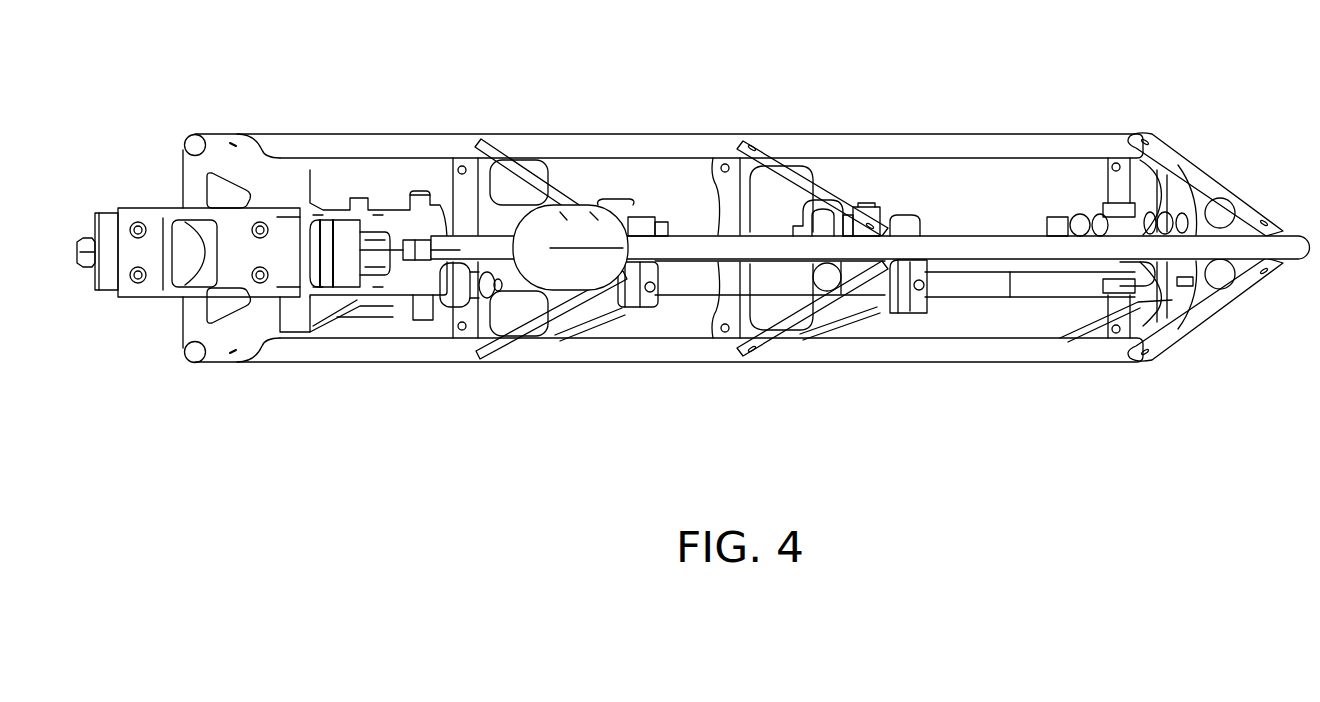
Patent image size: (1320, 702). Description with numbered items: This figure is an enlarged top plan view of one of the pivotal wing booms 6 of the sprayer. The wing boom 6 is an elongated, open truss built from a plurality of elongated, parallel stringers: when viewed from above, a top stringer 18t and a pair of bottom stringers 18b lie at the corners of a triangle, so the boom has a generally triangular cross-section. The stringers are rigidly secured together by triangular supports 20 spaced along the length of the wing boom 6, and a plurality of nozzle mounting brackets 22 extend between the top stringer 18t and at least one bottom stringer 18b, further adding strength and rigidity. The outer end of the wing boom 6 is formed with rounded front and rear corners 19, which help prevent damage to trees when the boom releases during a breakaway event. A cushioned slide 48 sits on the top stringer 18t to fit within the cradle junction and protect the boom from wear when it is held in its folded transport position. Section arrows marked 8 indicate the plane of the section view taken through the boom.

The wing boom 6 is at (750, 110).
The section line 8- 8 is at (198, 93).
The bottom stringer 18b is at (977, 138).
The top stringer 18t is at (987, 243).
The rounded front and rear corners 19 is at (1163, 143).
The triangular support 20 is at (820, 138).
The nozzle mounting bracket 22 is at (640, 308).
The cushioned slide 48 is at (567, 238).